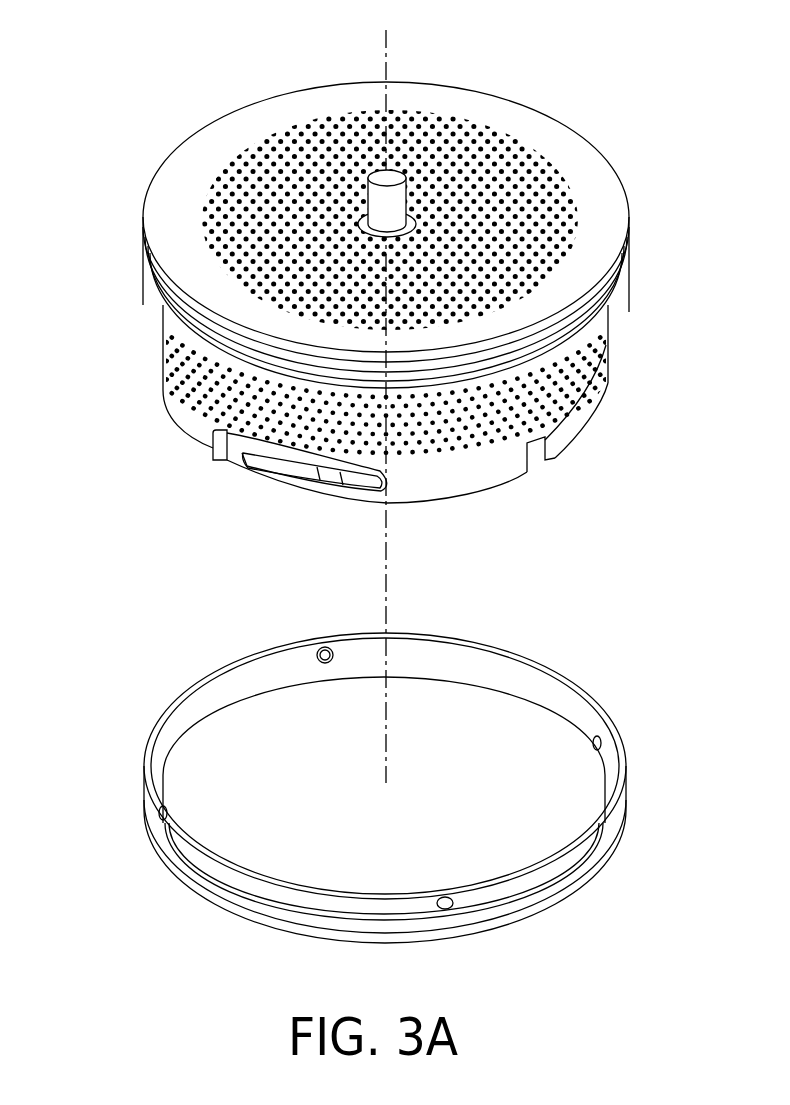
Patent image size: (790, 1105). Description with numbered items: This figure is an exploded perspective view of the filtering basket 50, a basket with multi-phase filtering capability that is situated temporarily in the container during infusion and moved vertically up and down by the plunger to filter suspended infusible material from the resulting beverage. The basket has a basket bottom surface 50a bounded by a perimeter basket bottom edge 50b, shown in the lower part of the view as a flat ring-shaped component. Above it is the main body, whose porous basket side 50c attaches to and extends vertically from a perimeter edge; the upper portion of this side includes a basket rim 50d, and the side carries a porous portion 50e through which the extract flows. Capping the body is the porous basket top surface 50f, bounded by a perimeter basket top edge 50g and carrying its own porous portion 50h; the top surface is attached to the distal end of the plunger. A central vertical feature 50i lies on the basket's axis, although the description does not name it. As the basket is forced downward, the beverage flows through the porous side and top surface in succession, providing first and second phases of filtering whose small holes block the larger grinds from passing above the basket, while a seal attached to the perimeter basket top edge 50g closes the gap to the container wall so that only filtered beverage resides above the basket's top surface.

The filtering basket 50 is at (99, 70).
The basket bottom surface 50a is at (500, 738).
The perimeter basket bottom edge 50b is at (590, 830).
The porous basket side 50c is at (175, 394).
The basket rim 50d is at (630, 220).
The porous portion of basket side 50e is at (610, 340).
The porous basket top surface 50f is at (538, 131).
The perimeter basket top edge 50g is at (143, 210).
The porous portion of basket top surface 50h is at (217, 268).
The central post 50i is at (388, 70).